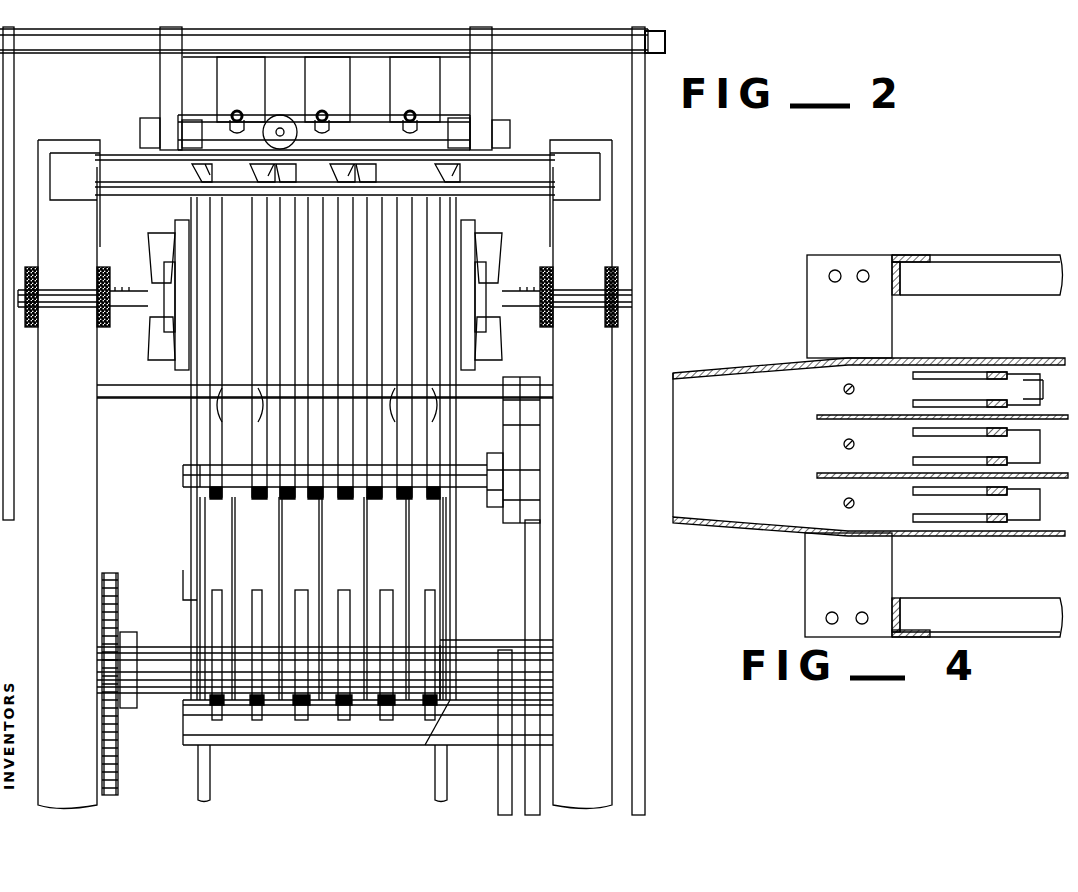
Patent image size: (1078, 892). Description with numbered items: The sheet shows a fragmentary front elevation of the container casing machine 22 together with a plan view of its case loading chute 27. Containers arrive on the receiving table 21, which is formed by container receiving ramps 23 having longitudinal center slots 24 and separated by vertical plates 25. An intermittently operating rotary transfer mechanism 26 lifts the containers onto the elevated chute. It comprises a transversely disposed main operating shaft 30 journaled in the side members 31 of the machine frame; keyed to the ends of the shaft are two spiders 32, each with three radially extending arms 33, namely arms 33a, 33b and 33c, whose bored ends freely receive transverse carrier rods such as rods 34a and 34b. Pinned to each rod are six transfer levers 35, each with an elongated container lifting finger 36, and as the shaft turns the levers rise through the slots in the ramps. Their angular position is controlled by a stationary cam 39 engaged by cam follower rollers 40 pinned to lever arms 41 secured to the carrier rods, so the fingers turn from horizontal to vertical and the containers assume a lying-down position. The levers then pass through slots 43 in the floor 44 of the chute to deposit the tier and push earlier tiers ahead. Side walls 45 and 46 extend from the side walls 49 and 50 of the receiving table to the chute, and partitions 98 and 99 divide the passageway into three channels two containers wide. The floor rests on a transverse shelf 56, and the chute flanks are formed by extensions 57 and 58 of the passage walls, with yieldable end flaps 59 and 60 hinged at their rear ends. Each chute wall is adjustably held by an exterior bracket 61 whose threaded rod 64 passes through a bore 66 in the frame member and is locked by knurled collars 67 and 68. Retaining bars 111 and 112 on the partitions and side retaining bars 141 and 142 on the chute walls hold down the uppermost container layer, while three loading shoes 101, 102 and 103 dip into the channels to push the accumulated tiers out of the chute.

In FIG. 2, the receiving table 21 is at (438, 745).
In FIG. 2, the container casing machine 22 is at (655, 230).
In FIG. 2, the container receiving ramps 23 is at (230, 745).
In FIG. 2, the longitudinal center slots 24 is at (340, 745).
In FIG. 2, the vertical plates 25 is at (237, 570).
In FIG. 2, the rotary transfer mechanism 26 is at (484, 632).
In FIG. 2, the case loading chute 27 is at (172, 400).
In FIG. 4, the case loading chute 27 is at (768, 506).
In FIG. 2, the main operating shaft 30 is at (168, 660).
In FIG. 2, the side members 31 is at (78, 482).
In FIG. 4, the side members 31 is at (912, 258).
In FIG. 2, the spiders 32 is at (200, 530).
In FIG. 2, the radially extending arms 33 is at (446, 574).
In FIG. 2, the radially extending arm 33a is at (205, 556).
In FIG. 2, the radially extending arm 33b is at (198, 745).
In FIG. 2, the radially extending arm 33c is at (454, 790).
In FIG. 2, the transverse carrier rod 34a is at (183, 478).
In FIG. 2, the transverse carrier rod 34b is at (183, 725).
In FIG. 2, the transfer levers 35 is at (222, 338).
In FIG. 4, the container lifting finger 36 is at (995, 386).
In FIG. 2, the stationary cam 39 is at (540, 598).
In FIG. 2, the cam follower rollers 40 is at (530, 505).
In FIG. 2, the lever arms 41 is at (503, 475).
In FIG. 2, the slots 43 is at (327, 411).
In FIG. 4, the slots 43 is at (913, 404).
In FIG. 2, the floor 44 is at (140, 388).
In FIG. 4, the floor 44 is at (797, 426).
In FIG. 2, the side wall 45 is at (191, 434).
In FIG. 2, the side wall 46 is at (452, 440).
In FIG. 2, the side wall 49 is at (183, 590).
In FIG. 2, the side wall 50 is at (448, 594).
In FIG. 4, the transverse board or shelf 56 is at (822, 320).
In FIG. 4, the side wall extension 57 is at (972, 540).
In FIG. 4, the side wall extension 58 is at (965, 360).
In FIG. 4, the end flap 59 is at (730, 530).
In FIG. 4, the end flap 60 is at (737, 370).
In FIG. 2, the bracket 61 is at (160, 258).
In FIG. 2, the threaded rod 64 is at (138, 300).
In FIG. 2, the bore 66 is at (70, 300).
In FIG. 2, the knurled collar 67 is at (100, 282).
In FIG. 2, the knurled collar 68 is at (38, 280).
In FIG. 2, the partition 98 is at (280, 518).
In FIG. 4, the partition 98 is at (840, 480).
In FIG. 2, the partition 99 is at (365, 518).
In FIG. 4, the partition 99 is at (846, 420).
In FIG. 2, the loading shoe 101 is at (250, 91).
In FIG. 2, the loading shoe 102 is at (336, 91).
In FIG. 2, the loading shoe 103 is at (426, 91).
In FIG. 2, the retaining bar 111 is at (305, 172).
In FIG. 2, the retaining bar 112 is at (255, 175).
In FIG. 2, the retaining bar 141 is at (192, 173).
In FIG. 2, the retaining bar 142 is at (462, 175).